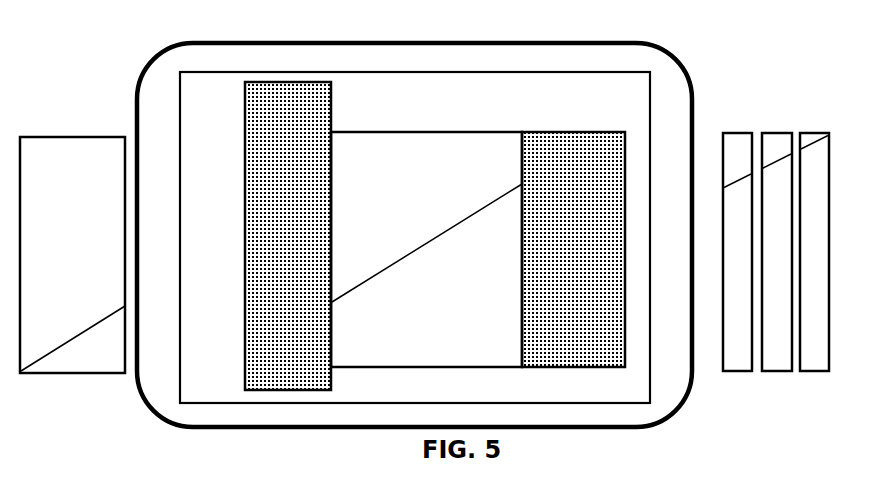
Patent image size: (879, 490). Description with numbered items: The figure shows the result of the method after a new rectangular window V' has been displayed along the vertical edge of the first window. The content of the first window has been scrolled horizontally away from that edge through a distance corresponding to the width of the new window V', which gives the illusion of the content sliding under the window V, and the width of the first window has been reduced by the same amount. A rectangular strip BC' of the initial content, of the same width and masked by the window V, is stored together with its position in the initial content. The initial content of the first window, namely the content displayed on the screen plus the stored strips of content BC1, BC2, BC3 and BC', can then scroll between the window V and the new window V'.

The window V is at (261, 236).
The new window V' is at (573, 249).
The rectangular strip BC' is at (72, 289).
The stored strip of content BC1 is at (825, 362).
The stored strip of content BC2 is at (775, 145).
The stored strip of content BC3 is at (740, 362).